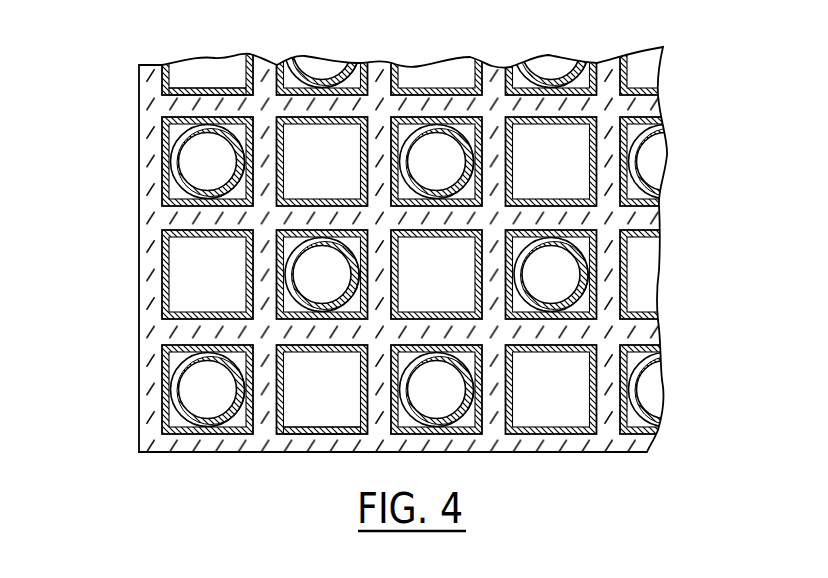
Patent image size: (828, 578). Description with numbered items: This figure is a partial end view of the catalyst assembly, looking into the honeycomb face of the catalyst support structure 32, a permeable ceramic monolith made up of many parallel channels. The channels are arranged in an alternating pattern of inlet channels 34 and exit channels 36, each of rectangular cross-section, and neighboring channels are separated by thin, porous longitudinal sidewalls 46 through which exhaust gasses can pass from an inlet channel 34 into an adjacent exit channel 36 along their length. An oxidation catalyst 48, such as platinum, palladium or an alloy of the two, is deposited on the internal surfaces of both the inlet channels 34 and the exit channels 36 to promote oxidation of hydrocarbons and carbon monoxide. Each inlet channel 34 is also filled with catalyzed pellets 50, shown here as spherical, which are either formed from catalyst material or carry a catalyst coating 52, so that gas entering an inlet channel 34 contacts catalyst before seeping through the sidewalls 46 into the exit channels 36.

The catalyst support structure 32 is at (140, 122).
The inlet channel 34 is at (177, 192).
The exit channel 36 is at (293, 368).
The porous longitudinal sidewall 46 is at (378, 143).
The oxidation catalyst 48 is at (205, 85).
The catalyzed pellet 50 is at (647, 168).
The catalyst coating 52 is at (478, 154).